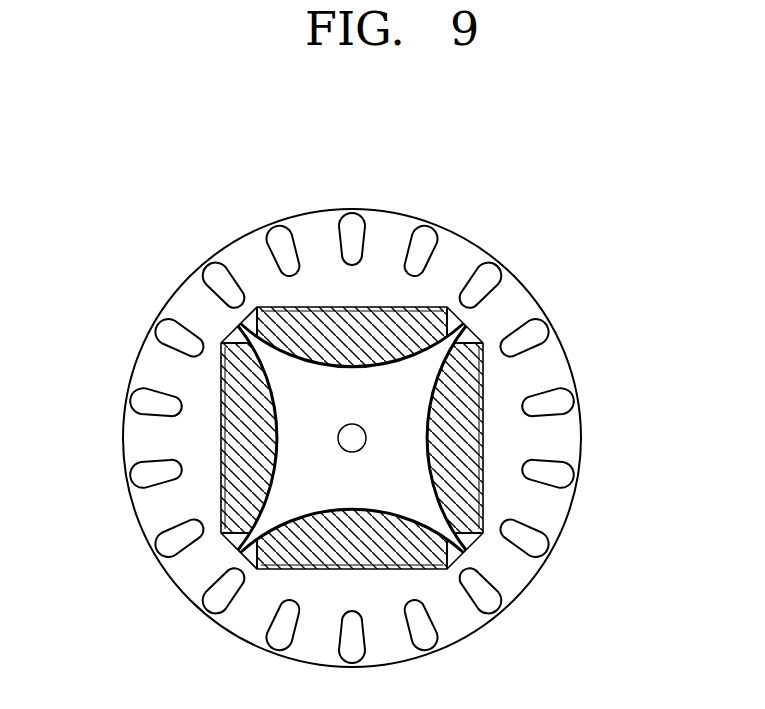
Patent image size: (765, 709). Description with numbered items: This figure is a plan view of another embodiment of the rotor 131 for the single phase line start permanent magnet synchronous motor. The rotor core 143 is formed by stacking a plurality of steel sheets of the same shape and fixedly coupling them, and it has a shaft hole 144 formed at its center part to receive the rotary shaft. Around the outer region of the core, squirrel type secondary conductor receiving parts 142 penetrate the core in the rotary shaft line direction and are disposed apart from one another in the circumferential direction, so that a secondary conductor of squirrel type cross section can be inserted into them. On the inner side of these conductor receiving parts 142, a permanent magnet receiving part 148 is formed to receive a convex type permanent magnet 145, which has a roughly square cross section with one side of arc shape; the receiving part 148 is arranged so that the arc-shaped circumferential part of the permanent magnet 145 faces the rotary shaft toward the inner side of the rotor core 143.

The rotor 131 is at (507, 213).
The squirrel type secondary conductor receiving part 142 is at (207, 273).
The rotor core 143 is at (518, 283).
The shaft hole 144 is at (366, 434).
The permanent magnet 145 is at (253, 485).
The permanent magnet receiving part 148 is at (468, 550).